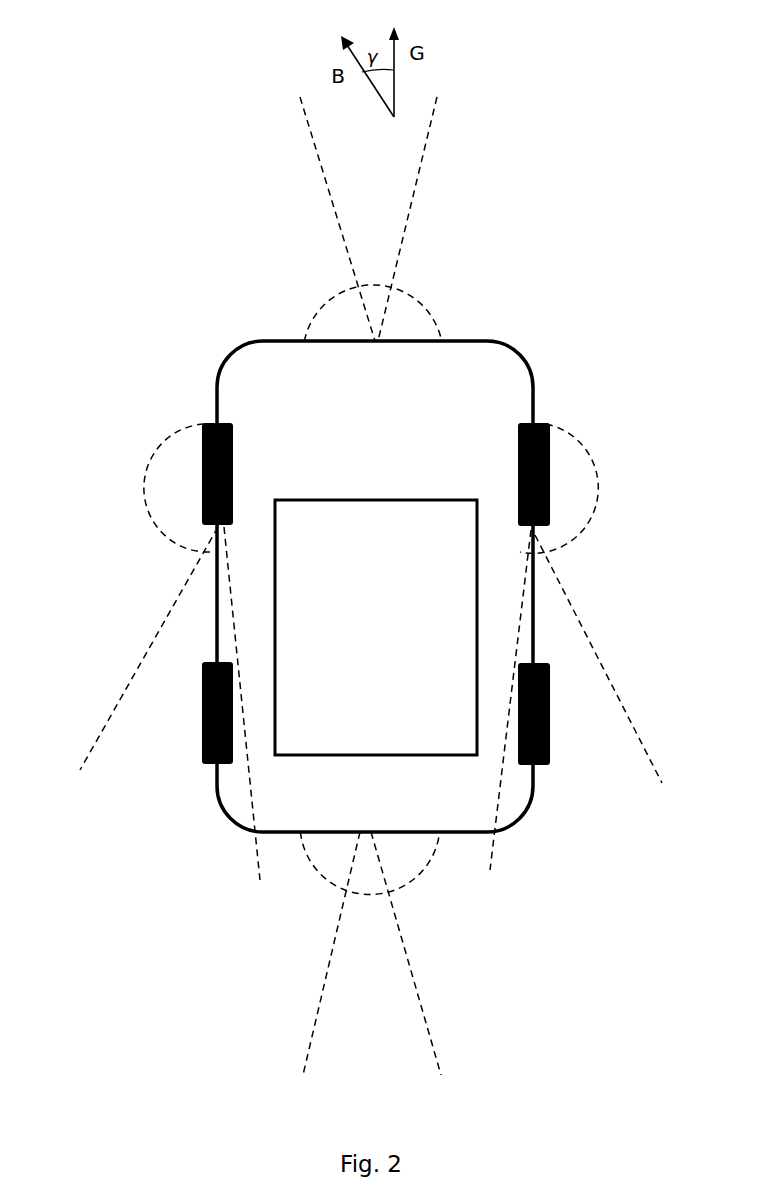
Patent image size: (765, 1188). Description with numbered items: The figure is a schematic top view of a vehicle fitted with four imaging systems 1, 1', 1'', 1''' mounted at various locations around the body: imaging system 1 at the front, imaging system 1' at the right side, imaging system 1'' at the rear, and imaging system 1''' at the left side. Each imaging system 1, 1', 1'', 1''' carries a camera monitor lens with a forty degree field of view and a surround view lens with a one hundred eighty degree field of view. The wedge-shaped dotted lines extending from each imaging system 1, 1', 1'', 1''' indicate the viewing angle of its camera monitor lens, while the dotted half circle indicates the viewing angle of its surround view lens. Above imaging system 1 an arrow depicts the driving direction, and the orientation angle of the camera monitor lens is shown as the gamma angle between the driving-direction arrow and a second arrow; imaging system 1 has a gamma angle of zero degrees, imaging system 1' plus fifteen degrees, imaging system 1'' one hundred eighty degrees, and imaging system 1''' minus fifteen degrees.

The imaging system 1 is at (371, 240).
The imaging system 1' is at (576, 647).
The imaging system 1'' is at (370, 934).
The imaging system 1''' is at (185, 652).